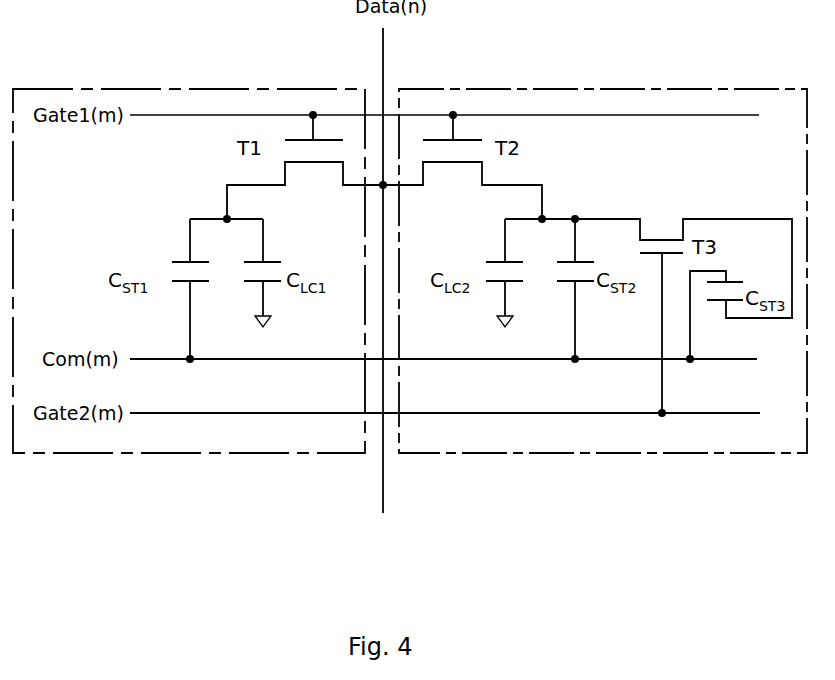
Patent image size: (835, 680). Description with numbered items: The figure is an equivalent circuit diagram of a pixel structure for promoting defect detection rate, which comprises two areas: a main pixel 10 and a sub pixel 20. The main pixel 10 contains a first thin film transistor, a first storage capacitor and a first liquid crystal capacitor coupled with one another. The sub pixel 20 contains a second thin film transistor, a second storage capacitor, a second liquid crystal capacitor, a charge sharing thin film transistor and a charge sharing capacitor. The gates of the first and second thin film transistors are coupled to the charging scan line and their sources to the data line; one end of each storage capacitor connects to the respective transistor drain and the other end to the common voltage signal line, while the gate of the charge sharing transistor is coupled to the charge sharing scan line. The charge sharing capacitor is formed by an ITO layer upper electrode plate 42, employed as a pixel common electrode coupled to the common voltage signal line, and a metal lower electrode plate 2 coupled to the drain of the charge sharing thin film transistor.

The main pixel 10 is at (192, 453).
The sub pixel 20 is at (595, 453).
The ITO layer upper electrode plate 42 is at (735, 282).
The metal lower electrode plate 2 is at (717, 303).